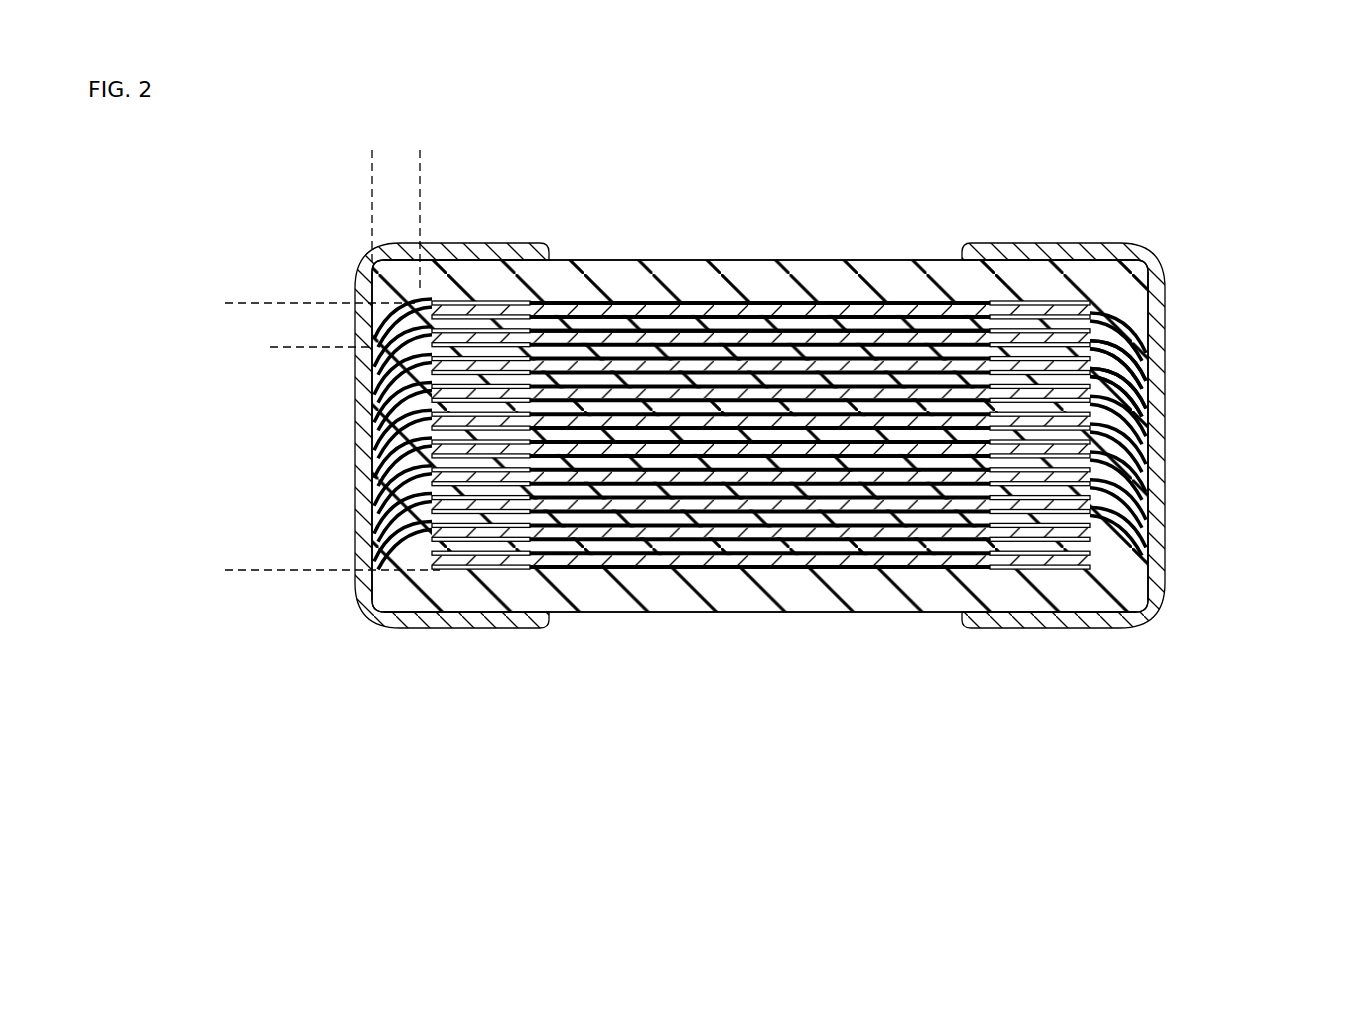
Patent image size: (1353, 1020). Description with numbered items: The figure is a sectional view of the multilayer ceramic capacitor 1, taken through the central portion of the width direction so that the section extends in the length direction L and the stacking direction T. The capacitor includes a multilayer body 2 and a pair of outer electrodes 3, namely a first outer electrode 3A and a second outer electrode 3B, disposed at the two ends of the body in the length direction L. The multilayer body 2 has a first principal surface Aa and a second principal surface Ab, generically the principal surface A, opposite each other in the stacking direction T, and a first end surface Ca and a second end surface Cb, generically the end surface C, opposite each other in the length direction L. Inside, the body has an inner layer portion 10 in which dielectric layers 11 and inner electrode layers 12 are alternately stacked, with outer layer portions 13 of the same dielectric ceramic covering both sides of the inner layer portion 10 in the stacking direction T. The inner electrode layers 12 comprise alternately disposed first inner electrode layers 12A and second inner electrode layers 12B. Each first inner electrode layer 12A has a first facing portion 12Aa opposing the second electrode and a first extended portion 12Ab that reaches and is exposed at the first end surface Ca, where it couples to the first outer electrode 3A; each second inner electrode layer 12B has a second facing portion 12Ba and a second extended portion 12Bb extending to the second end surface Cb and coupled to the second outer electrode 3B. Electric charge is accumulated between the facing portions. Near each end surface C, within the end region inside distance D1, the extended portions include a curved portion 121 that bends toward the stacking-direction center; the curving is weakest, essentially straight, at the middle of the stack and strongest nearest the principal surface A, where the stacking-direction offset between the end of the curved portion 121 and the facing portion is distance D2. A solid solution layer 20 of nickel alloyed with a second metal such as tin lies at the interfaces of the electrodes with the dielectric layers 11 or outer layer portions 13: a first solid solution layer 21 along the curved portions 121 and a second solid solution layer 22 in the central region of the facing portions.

The multilayer ceramic capacitor 1 is at (703, 170).
The multilayer body 2 is at (720, 393).
The outer electrodes 3 is at (760, 406).
The first outer electrode 3A is at (455, 243).
The second outer electrode 3B is at (1113, 243).
The inner layer portion 10 is at (720, 340).
The dielectric layer 11 is at (442, 382).
The inner electrode layer 12 is at (774, 340).
The first inner electrode layer 12A is at (689, 340).
The first facing portion 12Aa is at (568, 310).
The first extended portion 12Ab is at (455, 300).
The second inner electrode layer 12B is at (789, 340).
The second facing portion 12Ba is at (1003, 337).
The second extended portion 12Bb is at (1078, 330).
The outer layer portion 13 is at (437, 285).
The solid solution layer 20 is at (779, 302).
The first solid solution layer 21 is at (1127, 357).
The second solid solution layer 22 is at (632, 320).
The curved portion 121 is at (440, 312).
The principal surface A is at (760, 437).
The first principal surface Aa is at (783, 258).
The second principal surface Ab is at (773, 612).
The end surface C is at (756, 436).
The first end surface Ca is at (372, 448).
The second end surface Cb is at (1130, 498).
The distance D1 is at (453, 162).
The distance D2 is at (275, 397).
The length direction L is at (1165, 765).
The stacking direction T is at (1288, 243).